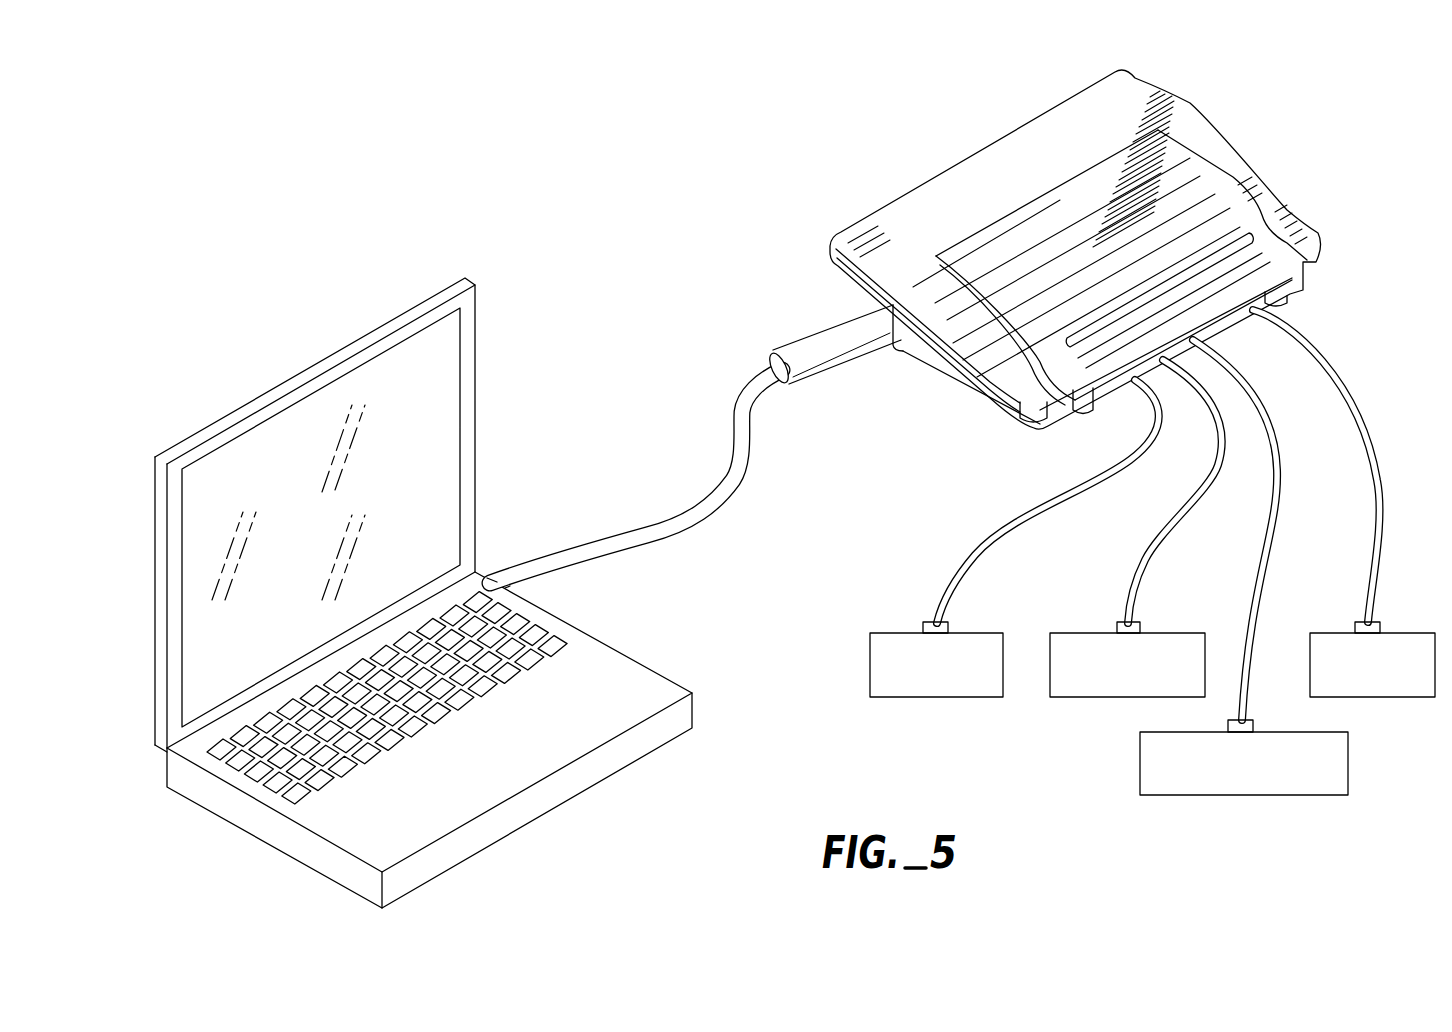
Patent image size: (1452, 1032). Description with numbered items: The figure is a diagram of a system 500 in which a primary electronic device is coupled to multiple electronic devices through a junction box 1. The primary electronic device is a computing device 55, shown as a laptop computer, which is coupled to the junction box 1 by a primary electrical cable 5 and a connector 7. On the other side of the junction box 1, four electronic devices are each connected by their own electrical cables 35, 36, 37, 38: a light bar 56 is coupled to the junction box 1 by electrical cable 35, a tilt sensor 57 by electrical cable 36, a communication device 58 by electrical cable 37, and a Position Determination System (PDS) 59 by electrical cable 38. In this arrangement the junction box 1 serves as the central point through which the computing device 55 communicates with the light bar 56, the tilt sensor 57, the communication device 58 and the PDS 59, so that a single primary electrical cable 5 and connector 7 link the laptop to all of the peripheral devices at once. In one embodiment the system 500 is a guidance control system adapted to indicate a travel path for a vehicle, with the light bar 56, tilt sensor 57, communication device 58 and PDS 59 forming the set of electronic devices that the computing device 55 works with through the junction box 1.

The junction box 1 is at (1190, 103).
The primary electrical cable 5 is at (637, 530).
The connector 7 is at (497, 574).
The electrical cable 35 is at (993, 535).
The electrical cable 36 is at (1148, 545).
The electrical cable 37 is at (1261, 567).
The electrical cable 38 is at (1383, 510).
The computing device 55 is at (608, 762).
The light bar 56 is at (936, 659).
The tilt sensor 57 is at (1127, 659).
The communication device 58 is at (1244, 757).
The Position Determination System (PDS) 59 is at (1372, 659).
The system 500 is at (423, 593).